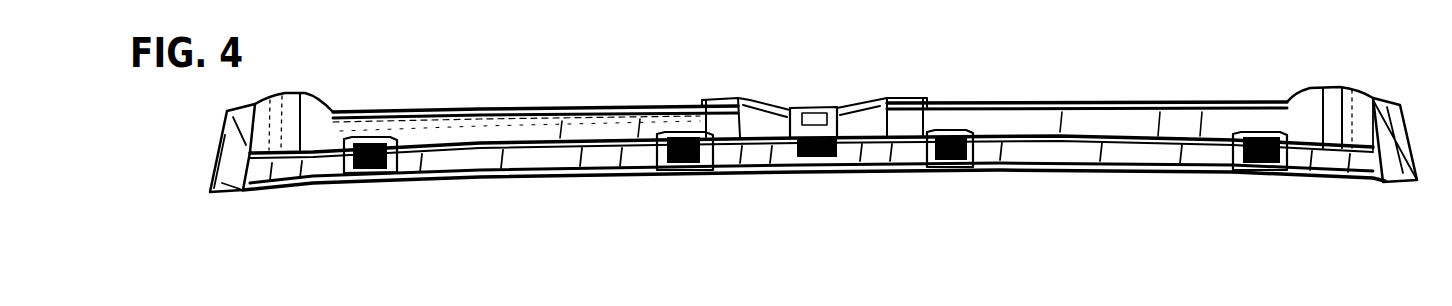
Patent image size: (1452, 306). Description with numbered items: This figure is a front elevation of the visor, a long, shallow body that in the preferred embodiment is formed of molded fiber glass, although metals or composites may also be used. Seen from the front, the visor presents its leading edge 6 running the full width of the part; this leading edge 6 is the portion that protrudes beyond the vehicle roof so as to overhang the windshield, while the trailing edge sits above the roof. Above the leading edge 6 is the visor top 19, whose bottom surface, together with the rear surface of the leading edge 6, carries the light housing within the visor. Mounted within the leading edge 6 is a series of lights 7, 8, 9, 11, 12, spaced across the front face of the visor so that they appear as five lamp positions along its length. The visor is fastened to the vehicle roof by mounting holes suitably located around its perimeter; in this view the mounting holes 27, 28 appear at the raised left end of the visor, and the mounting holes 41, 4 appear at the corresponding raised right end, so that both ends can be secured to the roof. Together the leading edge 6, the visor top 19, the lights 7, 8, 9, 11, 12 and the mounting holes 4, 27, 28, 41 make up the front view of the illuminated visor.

The mounting hole 4 is at (1407, 167).
The leading edge 6 is at (1112, 145).
The light 7 is at (350, 177).
The light 8 is at (687, 177).
The light 9 is at (800, 173).
The light 11 is at (950, 175).
The light 12 is at (1263, 167).
The visor top 19 is at (517, 130).
The mounting hole 27 is at (220, 180).
The mounting hole 28 is at (263, 108).
The mounting hole 41 is at (1363, 100).